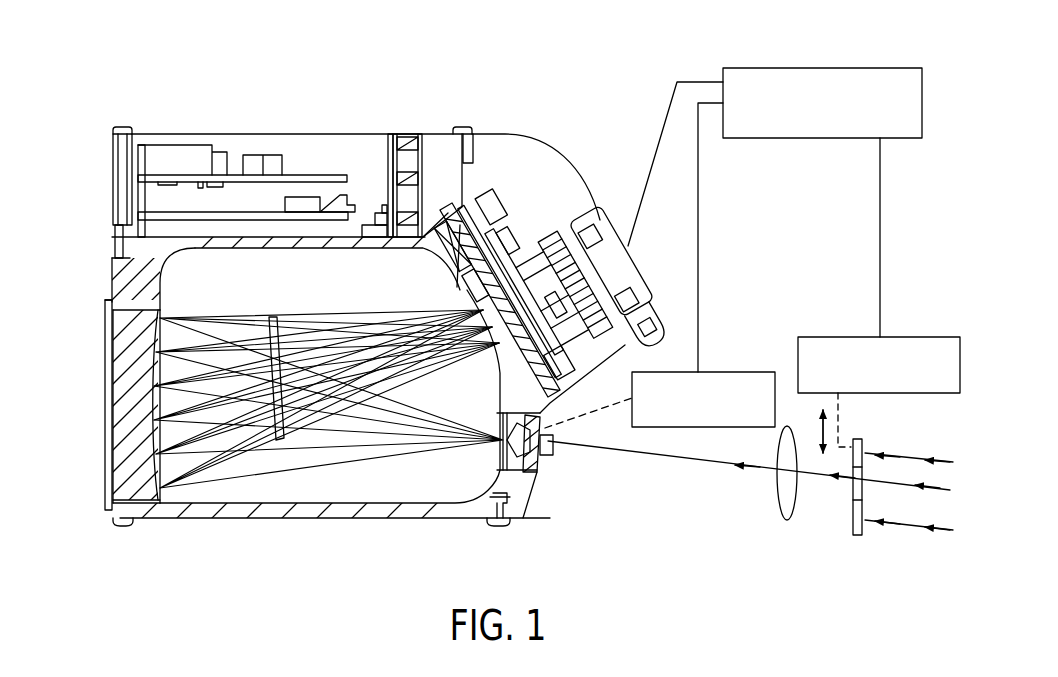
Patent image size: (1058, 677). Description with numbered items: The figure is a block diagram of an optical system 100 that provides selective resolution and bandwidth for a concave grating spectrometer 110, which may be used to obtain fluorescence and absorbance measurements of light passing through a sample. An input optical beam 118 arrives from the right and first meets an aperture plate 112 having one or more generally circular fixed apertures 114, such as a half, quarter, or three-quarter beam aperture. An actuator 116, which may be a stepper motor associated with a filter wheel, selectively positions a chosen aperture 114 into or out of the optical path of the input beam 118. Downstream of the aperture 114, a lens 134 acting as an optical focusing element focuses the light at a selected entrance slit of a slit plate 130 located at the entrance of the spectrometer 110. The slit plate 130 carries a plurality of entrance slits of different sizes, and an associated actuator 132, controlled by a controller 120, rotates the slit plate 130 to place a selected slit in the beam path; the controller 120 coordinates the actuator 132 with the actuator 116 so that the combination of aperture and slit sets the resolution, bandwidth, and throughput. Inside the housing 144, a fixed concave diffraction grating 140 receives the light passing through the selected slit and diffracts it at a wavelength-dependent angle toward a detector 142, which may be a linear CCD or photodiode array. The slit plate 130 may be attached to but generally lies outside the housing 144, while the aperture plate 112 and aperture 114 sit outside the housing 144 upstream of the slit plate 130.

The optical system 100 is at (160, 75).
The concave grating spectrometer 110 is at (218, 522).
The aperture plate 112 is at (857, 537).
The aperture 114 is at (848, 503).
The actuator 116 is at (925, 337).
The input optical beam 118 is at (943, 545).
The controller 120 is at (825, 66).
The slit plate 130 is at (545, 460).
The actuator 132 is at (730, 372).
The lens 134 is at (778, 487).
The concave diffraction grating 140 is at (127, 477).
The detector 142 is at (497, 257).
The housing 144 is at (127, 267).